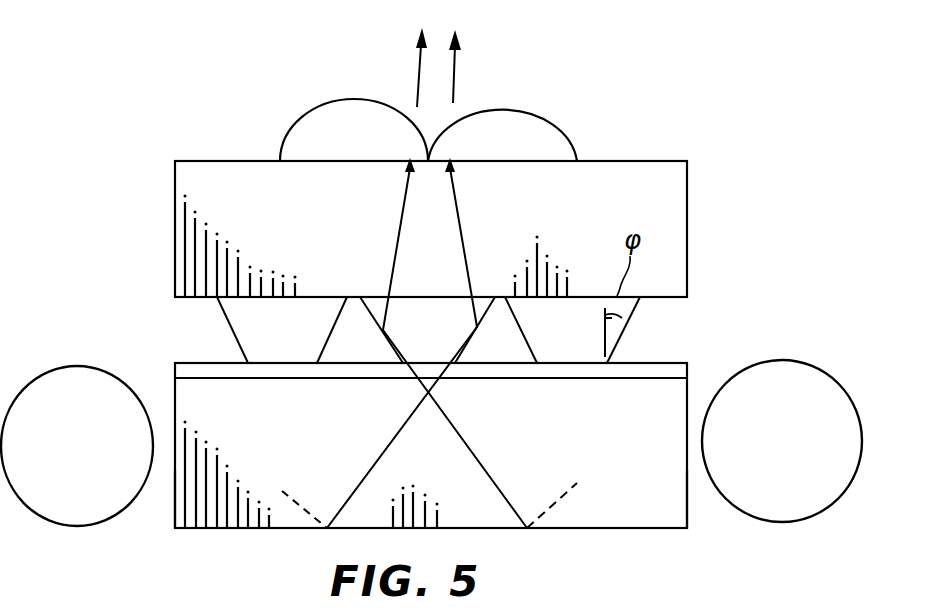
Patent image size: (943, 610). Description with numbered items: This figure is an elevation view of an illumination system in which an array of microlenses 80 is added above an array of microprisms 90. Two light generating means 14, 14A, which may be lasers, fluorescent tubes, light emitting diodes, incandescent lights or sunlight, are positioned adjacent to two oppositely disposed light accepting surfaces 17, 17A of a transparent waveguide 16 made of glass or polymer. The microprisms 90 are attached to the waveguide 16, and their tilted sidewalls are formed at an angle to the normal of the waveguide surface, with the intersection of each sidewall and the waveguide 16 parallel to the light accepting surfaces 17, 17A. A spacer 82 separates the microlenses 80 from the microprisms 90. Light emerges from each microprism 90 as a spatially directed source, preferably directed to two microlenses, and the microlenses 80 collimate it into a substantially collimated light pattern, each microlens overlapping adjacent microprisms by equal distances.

The light generating means 14 is at (48, 366).
The light generating means 14A is at (781, 361).
The waveguide 16 is at (672, 530).
The light accepting surface 17 is at (176, 518).
The light accepting surface 17A is at (687, 519).
The microlenses 80 is at (330, 101).
The spacer 82 is at (218, 161).
The microprisms 90 is at (226, 315).